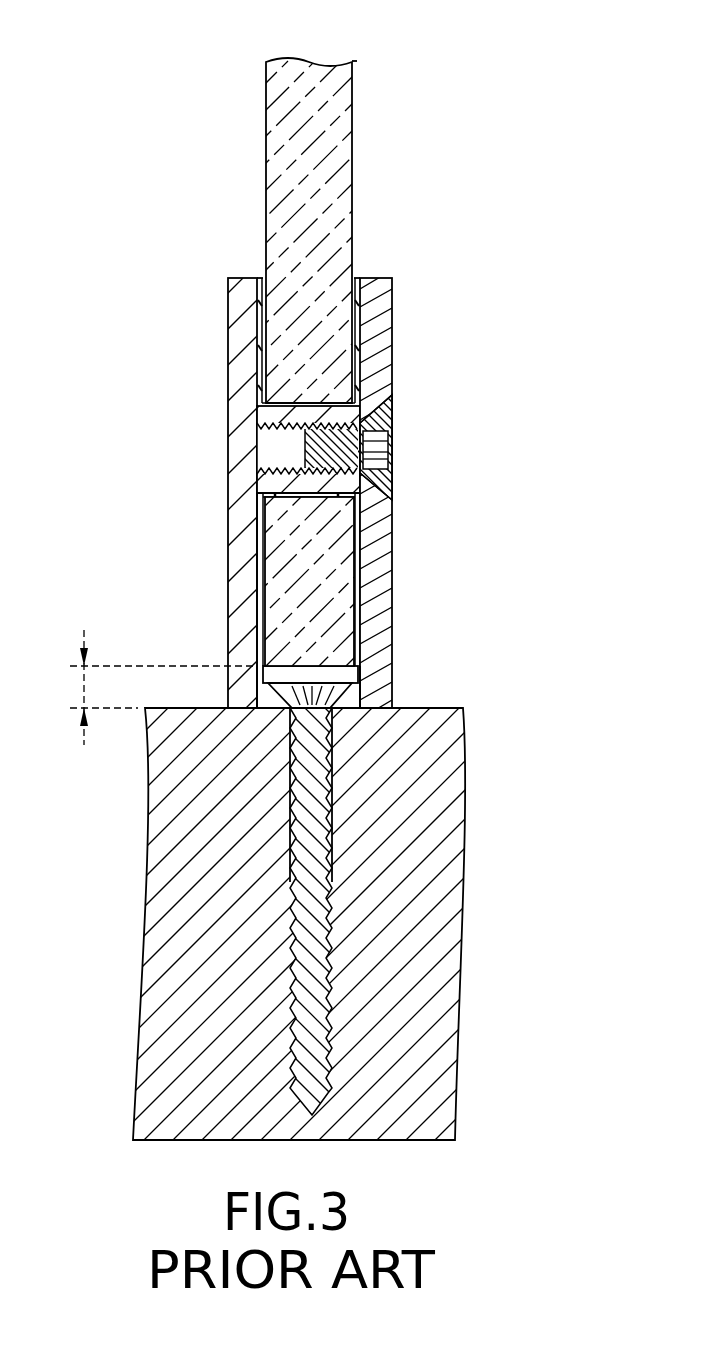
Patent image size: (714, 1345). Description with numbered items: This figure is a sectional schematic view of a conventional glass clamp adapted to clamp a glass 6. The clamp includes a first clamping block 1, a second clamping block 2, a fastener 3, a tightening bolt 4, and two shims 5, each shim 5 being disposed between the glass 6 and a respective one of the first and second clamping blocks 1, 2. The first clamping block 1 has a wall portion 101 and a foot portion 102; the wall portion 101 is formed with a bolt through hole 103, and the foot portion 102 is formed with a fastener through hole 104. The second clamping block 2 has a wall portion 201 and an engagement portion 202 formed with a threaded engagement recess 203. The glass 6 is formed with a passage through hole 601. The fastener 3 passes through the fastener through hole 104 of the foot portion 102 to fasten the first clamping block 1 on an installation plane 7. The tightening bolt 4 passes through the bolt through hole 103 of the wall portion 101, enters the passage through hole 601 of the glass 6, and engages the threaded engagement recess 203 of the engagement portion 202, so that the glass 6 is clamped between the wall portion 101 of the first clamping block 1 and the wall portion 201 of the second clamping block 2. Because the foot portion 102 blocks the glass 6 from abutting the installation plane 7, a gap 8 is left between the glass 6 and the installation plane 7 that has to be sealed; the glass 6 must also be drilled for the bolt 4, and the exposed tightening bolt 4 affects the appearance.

The first clamping block 1 is at (332, 485).
The wall portion 101 is at (380, 308).
The foot portion 102 is at (270, 700).
The bolt through hole 103 is at (370, 398).
The fastener through hole 104 is at (363, 692).
The second clamping block 2 is at (357, 493).
The wall portion 201 is at (235, 365).
The engagement portion 202 is at (352, 515).
The threaded engagement recess 203 is at (275, 447).
The fastener 3 is at (317, 780).
The tightening bolt 4 is at (345, 452).
The shims 5 is at (262, 295).
The glass 6 is at (316, 75).
The passage through hole 601 is at (285, 505).
The installation plane 7 is at (440, 708).
The gap 8 is at (154, 687).